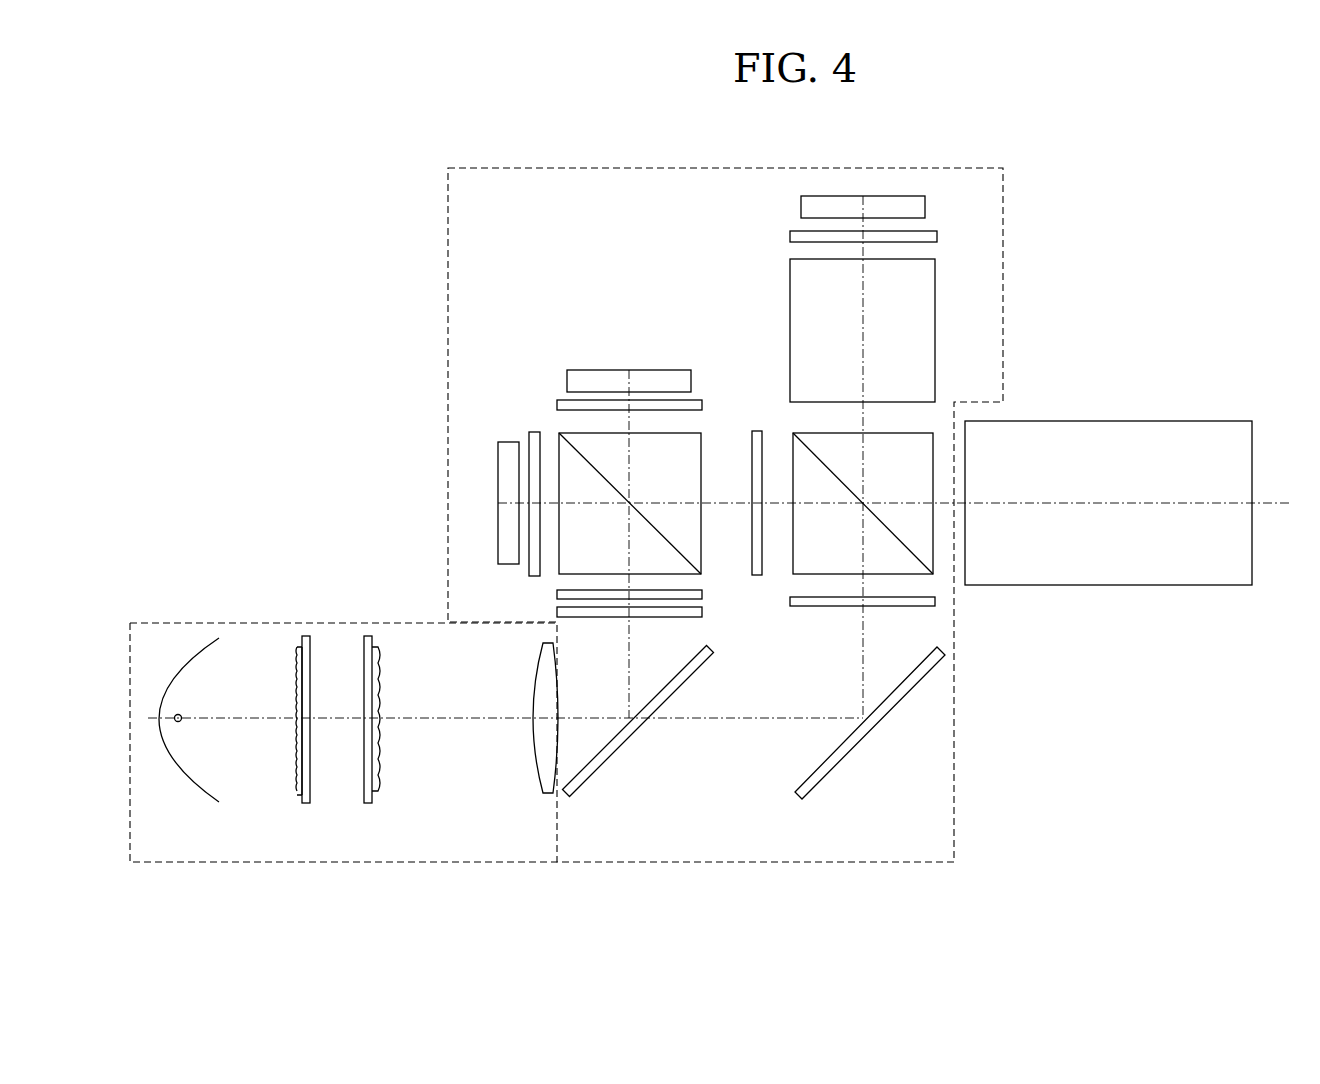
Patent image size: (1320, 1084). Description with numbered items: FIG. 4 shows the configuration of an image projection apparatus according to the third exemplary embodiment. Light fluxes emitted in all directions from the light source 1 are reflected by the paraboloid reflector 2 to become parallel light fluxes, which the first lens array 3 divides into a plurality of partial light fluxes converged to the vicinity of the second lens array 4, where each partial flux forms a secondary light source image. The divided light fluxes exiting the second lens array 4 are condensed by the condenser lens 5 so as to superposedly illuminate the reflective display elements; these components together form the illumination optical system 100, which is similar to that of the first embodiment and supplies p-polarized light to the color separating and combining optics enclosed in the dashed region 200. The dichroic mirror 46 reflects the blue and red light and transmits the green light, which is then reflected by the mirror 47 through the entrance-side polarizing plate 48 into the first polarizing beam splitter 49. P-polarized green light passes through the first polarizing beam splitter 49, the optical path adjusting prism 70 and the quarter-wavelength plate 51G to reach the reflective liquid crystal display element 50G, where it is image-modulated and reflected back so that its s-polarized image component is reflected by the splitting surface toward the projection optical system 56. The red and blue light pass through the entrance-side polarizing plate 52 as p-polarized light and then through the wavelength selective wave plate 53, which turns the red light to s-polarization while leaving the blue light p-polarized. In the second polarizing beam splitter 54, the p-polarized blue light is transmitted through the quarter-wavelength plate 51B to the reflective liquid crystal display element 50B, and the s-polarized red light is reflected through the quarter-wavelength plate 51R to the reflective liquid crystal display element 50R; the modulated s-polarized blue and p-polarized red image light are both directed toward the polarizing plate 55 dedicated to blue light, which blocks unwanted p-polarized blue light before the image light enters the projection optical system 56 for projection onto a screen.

The light source 1 is at (181, 722).
The paraboloid reflector 2 is at (200, 800).
The first lens array 3 is at (300, 800).
The second lens array 4 is at (363, 800).
The condenser lens 5 is at (538, 788).
The dichroic mirror 46 is at (578, 796).
The mirror 47 is at (818, 790).
The entrance-side polarizing plate for green light 48 is at (805, 607).
The first polarizing beam splitter 49 is at (795, 576).
The reflective liquid crystal display element for blue 50B is at (567, 378).
The reflective liquid crystal display element for green 50G is at (926, 200).
The reflective liquid crystal display element for red 50R is at (498, 464).
The quarter-wavelength plate for blue 51B is at (557, 404).
The quarter-wavelength plate for green 51G is at (938, 235).
The quarter-wavelength plate for red 51R is at (534, 578).
The entrance-side polarizing plate for red light and blue light 52 is at (703, 614).
The wavelength selective wave plate 53 is at (703, 595).
The second polarizing beam splitter 54 is at (702, 443).
The polarizing plate dedicated to blue light 55 is at (757, 431).
The projection optical system 56 is at (1168, 421).
The optical path adjusting prism 70 is at (936, 280).
The illumination optical system 100 is at (190, 864).
The color separating and combining optical system 200 is at (540, 168).